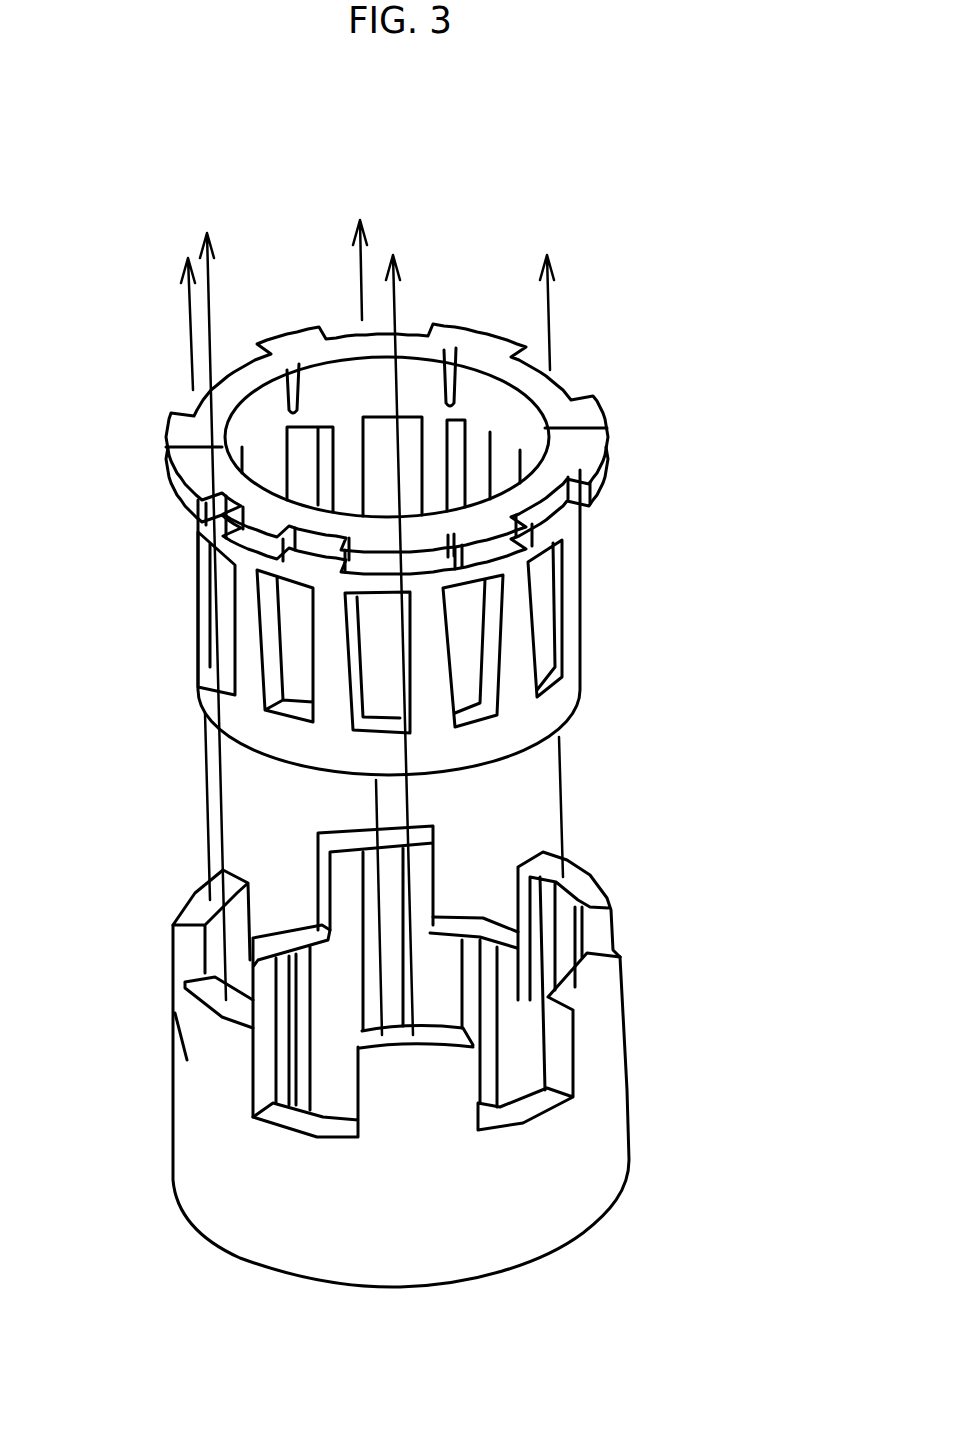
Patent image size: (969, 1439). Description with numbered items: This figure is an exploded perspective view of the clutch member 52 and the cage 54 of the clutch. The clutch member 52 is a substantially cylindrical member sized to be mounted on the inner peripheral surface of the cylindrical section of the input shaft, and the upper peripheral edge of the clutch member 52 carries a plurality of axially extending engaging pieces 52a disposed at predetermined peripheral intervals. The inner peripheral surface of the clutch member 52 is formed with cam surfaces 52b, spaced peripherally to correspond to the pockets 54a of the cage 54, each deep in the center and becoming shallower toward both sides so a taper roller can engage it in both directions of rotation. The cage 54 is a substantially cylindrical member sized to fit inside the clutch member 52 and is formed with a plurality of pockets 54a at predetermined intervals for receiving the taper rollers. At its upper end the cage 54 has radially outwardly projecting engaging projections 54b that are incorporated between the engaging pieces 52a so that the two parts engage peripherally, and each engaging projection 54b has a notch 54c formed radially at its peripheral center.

The clutch member 52 is at (595, 1152).
The engaging pieces 52a is at (600, 1020).
The cam surfaces 52b is at (300, 1063).
The cage 54 is at (286, 736).
The pockets 54a is at (280, 630).
The engaging projections 54b is at (607, 460).
The notch 54c is at (618, 425).